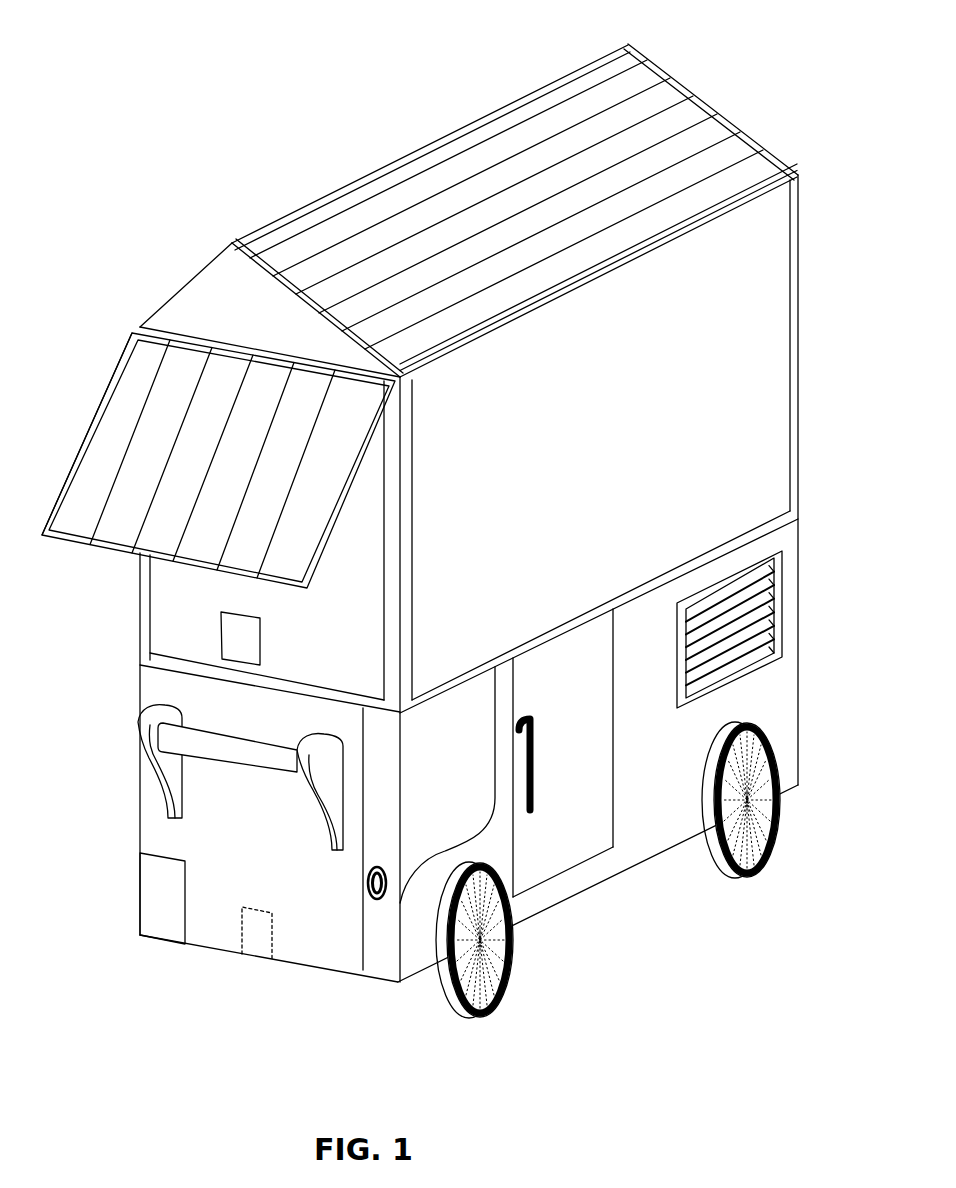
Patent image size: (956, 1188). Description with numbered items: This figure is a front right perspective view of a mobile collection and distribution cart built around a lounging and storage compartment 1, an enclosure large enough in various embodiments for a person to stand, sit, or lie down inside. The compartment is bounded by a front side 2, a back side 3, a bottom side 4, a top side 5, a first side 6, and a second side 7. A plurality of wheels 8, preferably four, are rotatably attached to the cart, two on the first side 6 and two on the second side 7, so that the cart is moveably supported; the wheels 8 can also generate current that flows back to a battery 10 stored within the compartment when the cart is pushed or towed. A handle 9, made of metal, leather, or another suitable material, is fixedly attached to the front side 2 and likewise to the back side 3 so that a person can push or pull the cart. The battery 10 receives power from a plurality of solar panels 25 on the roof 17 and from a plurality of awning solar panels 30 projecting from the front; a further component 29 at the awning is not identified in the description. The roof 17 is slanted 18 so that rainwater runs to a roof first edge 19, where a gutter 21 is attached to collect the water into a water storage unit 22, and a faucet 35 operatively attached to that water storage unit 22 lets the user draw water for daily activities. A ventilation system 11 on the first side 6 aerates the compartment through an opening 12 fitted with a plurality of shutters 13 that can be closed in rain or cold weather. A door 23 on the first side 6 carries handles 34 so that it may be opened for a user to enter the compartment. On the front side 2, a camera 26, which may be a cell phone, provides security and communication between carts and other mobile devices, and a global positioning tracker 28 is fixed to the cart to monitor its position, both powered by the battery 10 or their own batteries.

The lounging and storage compartment 1 is at (767, 358).
The front side 2 is at (193, 600).
The back side 3 is at (800, 320).
The bottom side 4 is at (307, 970).
The top side 5 is at (210, 332).
The first side 6 is at (573, 875).
The second side 7 is at (140, 627).
The wheels 8 is at (770, 857).
The handle 9 is at (137, 730).
The battery 10 is at (143, 900).
The ventilation system 11 is at (733, 640).
The opening 12 is at (800, 630).
The shutters 13 is at (782, 587).
The roof 17 is at (278, 216).
The roof slant 18 is at (763, 147).
The roof first edge 19 is at (690, 237).
The gutter 21 is at (463, 350).
The water storage unit 22 is at (490, 787).
The door 23 is at (610, 793).
The solar panels 25 is at (445, 138).
The camera 26 is at (250, 633).
The global positioning tracker 28 is at (243, 903).
The awning side frame 29 is at (84, 442).
The awning solar panels 30 is at (110, 383).
The handles 34 is at (533, 742).
The faucet 35 is at (377, 903).